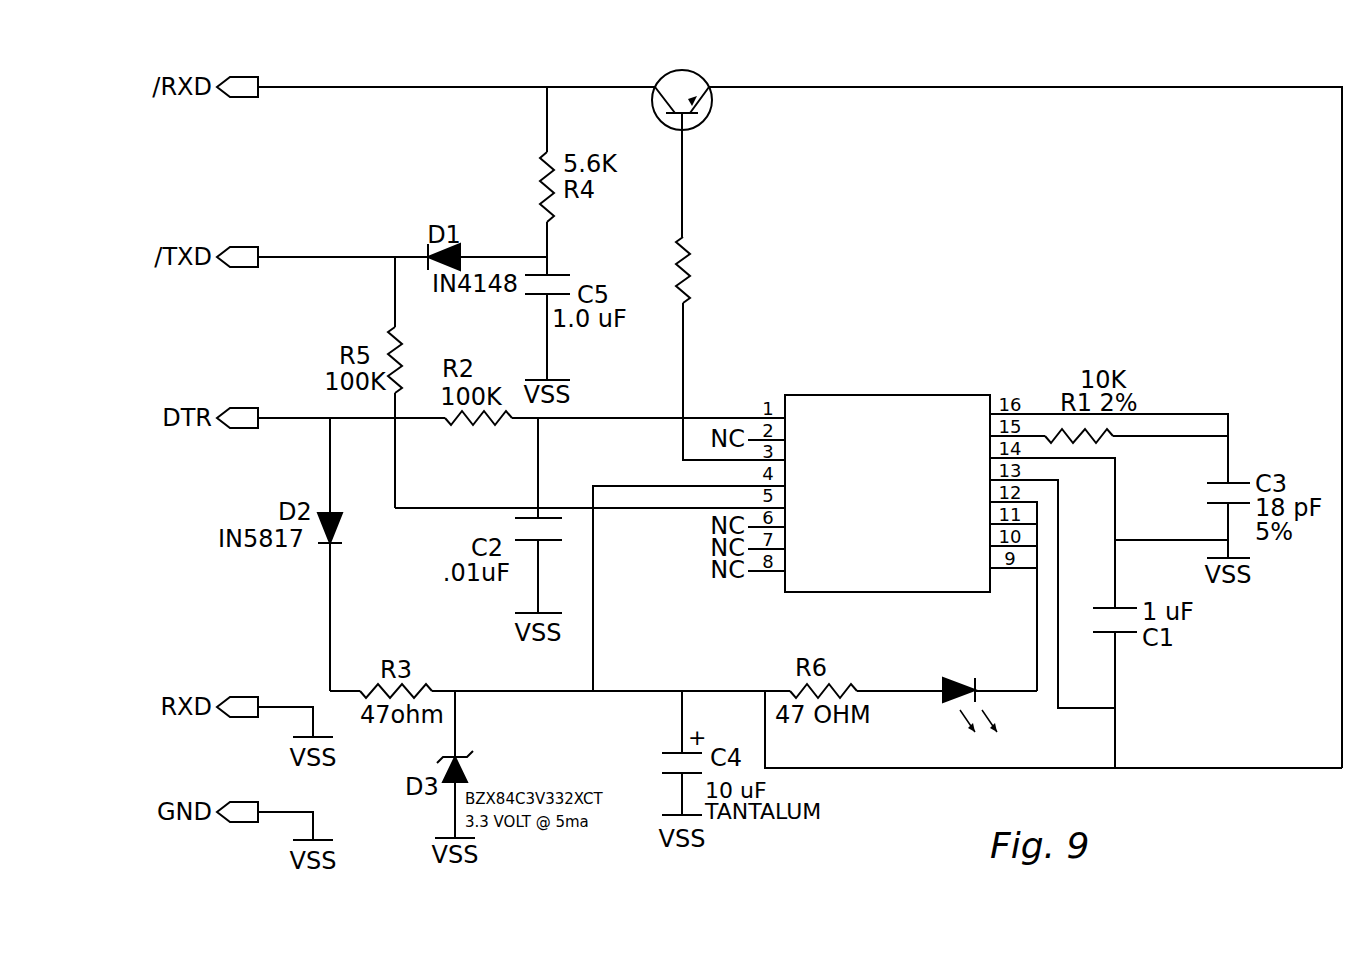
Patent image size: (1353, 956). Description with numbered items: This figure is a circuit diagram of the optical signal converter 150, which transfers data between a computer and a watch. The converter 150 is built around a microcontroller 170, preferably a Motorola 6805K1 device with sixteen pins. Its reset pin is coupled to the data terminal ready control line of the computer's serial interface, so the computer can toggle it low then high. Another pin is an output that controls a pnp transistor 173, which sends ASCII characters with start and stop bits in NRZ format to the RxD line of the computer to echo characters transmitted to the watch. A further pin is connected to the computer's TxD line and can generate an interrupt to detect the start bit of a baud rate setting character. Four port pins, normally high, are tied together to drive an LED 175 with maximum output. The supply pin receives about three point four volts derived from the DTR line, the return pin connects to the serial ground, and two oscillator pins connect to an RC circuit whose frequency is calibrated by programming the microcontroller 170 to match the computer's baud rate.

The optical signal converter 150 is at (750, 66).
The microcontroller 170 is at (888, 398).
The pnp transistor 173 is at (702, 122).
The LED 175 is at (978, 691).